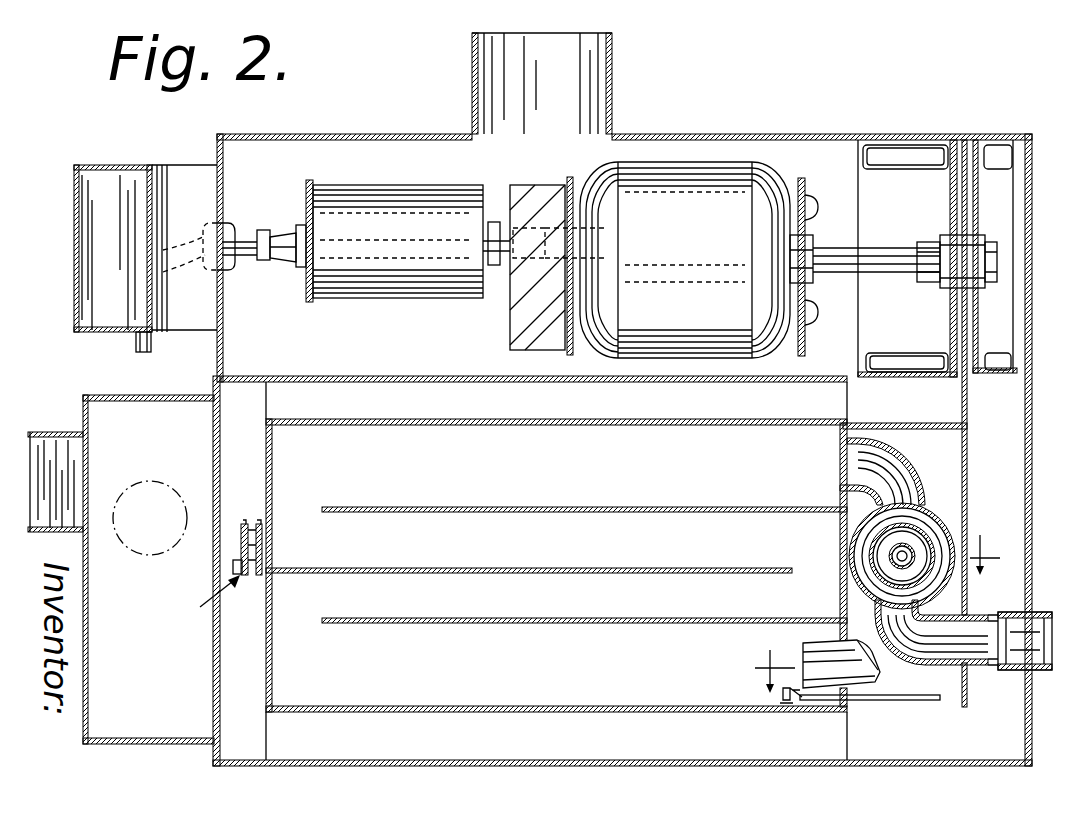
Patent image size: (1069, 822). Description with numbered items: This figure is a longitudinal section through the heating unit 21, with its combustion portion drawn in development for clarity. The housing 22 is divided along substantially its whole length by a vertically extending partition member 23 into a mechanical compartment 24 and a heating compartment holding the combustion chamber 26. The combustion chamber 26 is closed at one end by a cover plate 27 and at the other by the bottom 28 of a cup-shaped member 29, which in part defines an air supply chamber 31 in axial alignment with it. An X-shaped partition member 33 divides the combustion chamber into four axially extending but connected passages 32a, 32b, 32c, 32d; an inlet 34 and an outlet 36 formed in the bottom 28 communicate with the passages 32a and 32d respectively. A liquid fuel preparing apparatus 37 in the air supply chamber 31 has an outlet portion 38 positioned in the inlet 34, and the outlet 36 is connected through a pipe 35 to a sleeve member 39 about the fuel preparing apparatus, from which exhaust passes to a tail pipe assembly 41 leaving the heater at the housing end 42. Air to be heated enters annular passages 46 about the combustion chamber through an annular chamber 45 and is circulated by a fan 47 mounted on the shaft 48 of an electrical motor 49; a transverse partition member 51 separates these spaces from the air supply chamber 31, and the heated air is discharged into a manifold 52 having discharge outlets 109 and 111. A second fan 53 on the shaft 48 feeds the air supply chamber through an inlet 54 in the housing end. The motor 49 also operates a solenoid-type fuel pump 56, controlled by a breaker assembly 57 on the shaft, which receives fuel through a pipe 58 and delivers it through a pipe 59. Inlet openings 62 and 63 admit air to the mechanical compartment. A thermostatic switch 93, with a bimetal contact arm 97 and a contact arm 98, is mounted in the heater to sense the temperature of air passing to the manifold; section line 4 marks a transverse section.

The heating unit 21 is at (700, 130).
The housing 22 is at (838, 137).
The partition member 23 is at (251, 377).
The mechanical compartment 24 is at (424, 178).
The combustion chamber 26 is at (265, 696).
The cover plate 27 is at (272, 470).
The bottom 28 is at (840, 535).
The cup-shaped member 29 is at (906, 706).
The air supply chamber 31 is at (950, 456).
The passage 32a is at (590, 666).
The passage 32b is at (585, 604).
The passage 32c is at (585, 544).
The passage 32d is at (590, 474).
The partition member 33 is at (443, 562).
The inlet 34 is at (835, 641).
The pipe 35 is at (922, 473).
The outlet 36 is at (843, 445).
The liquid fuel preparing apparatus 37 is at (868, 567).
The outlet portion 38 is at (812, 672).
The sleeve member 39 is at (926, 520).
The tail pipe assembly 41 is at (961, 620).
The housing end 42 is at (1026, 513).
The annular chamber 45 is at (920, 414).
The annular passages 46 is at (580, 414).
The fan 47 is at (918, 150).
The shaft 48 is at (830, 257).
The electrical motor 49 is at (736, 160).
The partition member 51 is at (968, 402).
The manifold 52 is at (153, 396).
The fan 53 is at (995, 150).
The inlet 54 is at (1030, 168).
The fuel pump 56 is at (392, 297).
The breaker assembly 57 is at (514, 318).
The pipe 58 is at (135, 340).
The pipe 59 is at (622, 260).
The inlet opening 62 is at (596, 75).
The inlet opening 63 is at (128, 180).
The thermostatic switch 93 is at (202, 598).
The bimetal contact arm 97 is at (263, 538).
The contact arm 98 is at (240, 539).
The discharge outlet 109 is at (58, 413).
The discharge outlet 111 is at (160, 481).
The section line 4 is at (876, 611).